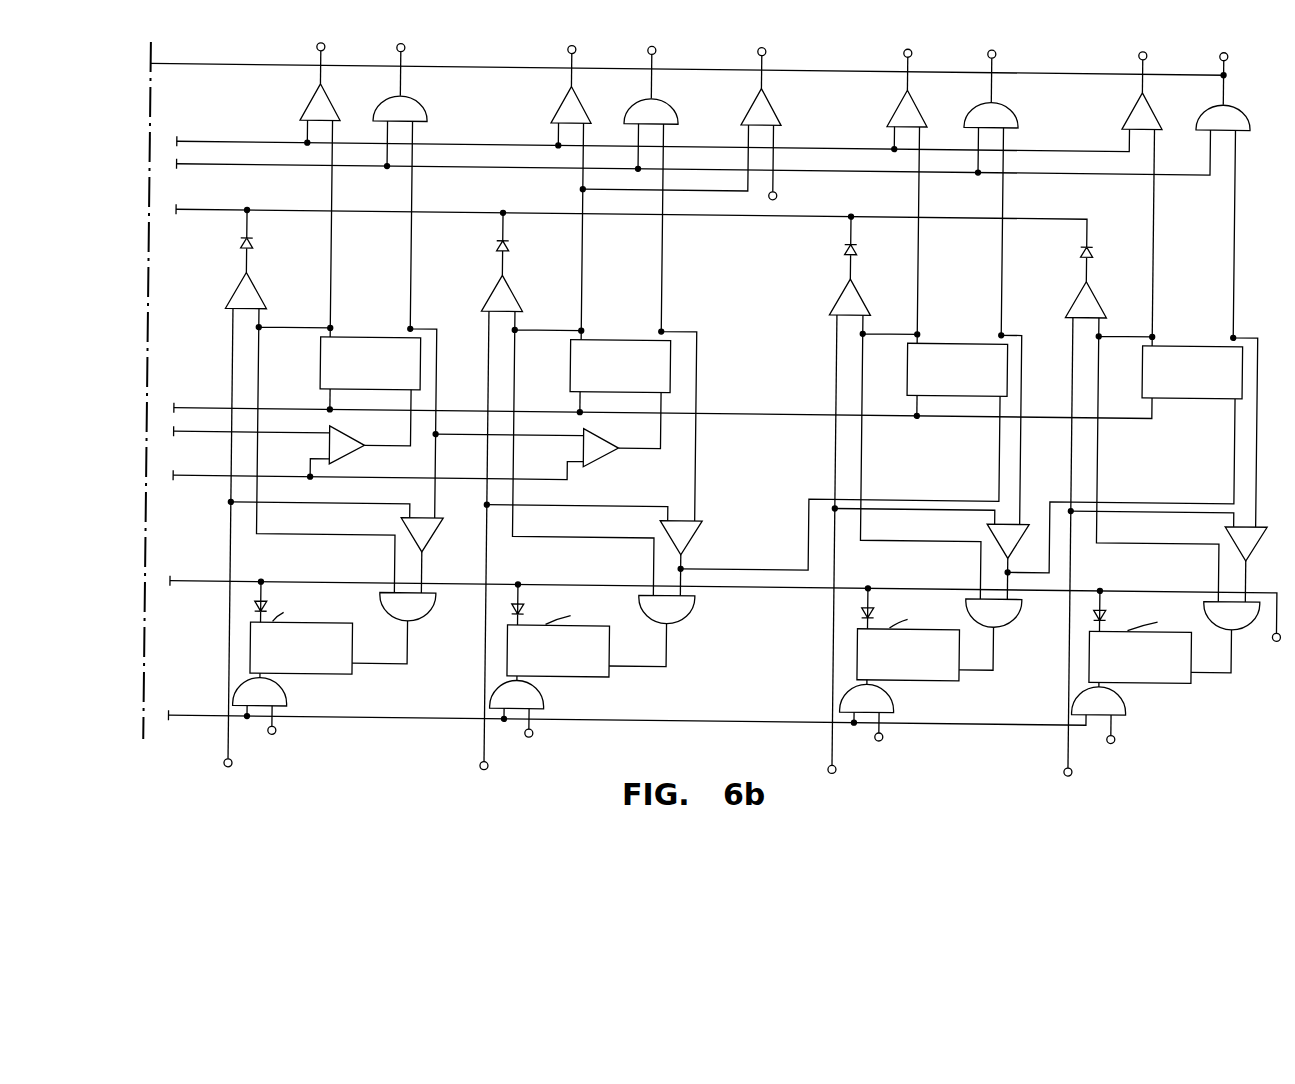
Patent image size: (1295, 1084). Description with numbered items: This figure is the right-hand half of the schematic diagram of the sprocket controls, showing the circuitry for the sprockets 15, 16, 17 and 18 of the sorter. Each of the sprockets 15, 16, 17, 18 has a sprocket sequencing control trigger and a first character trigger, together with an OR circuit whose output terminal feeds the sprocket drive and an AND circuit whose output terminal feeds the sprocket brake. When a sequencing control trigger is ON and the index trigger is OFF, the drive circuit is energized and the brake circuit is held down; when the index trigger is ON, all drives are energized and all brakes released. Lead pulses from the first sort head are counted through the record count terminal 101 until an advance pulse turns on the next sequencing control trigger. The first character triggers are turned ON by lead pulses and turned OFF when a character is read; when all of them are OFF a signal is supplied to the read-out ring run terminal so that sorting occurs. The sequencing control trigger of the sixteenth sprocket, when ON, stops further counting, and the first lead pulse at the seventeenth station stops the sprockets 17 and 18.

The record count terminal 101 is at (762, 54).
The sprocket 15 is at (342, 340).
The sprocket 16 is at (592, 340).
The sprocket 17 is at (929, 340).
The sprocket 18 is at (1164, 340).